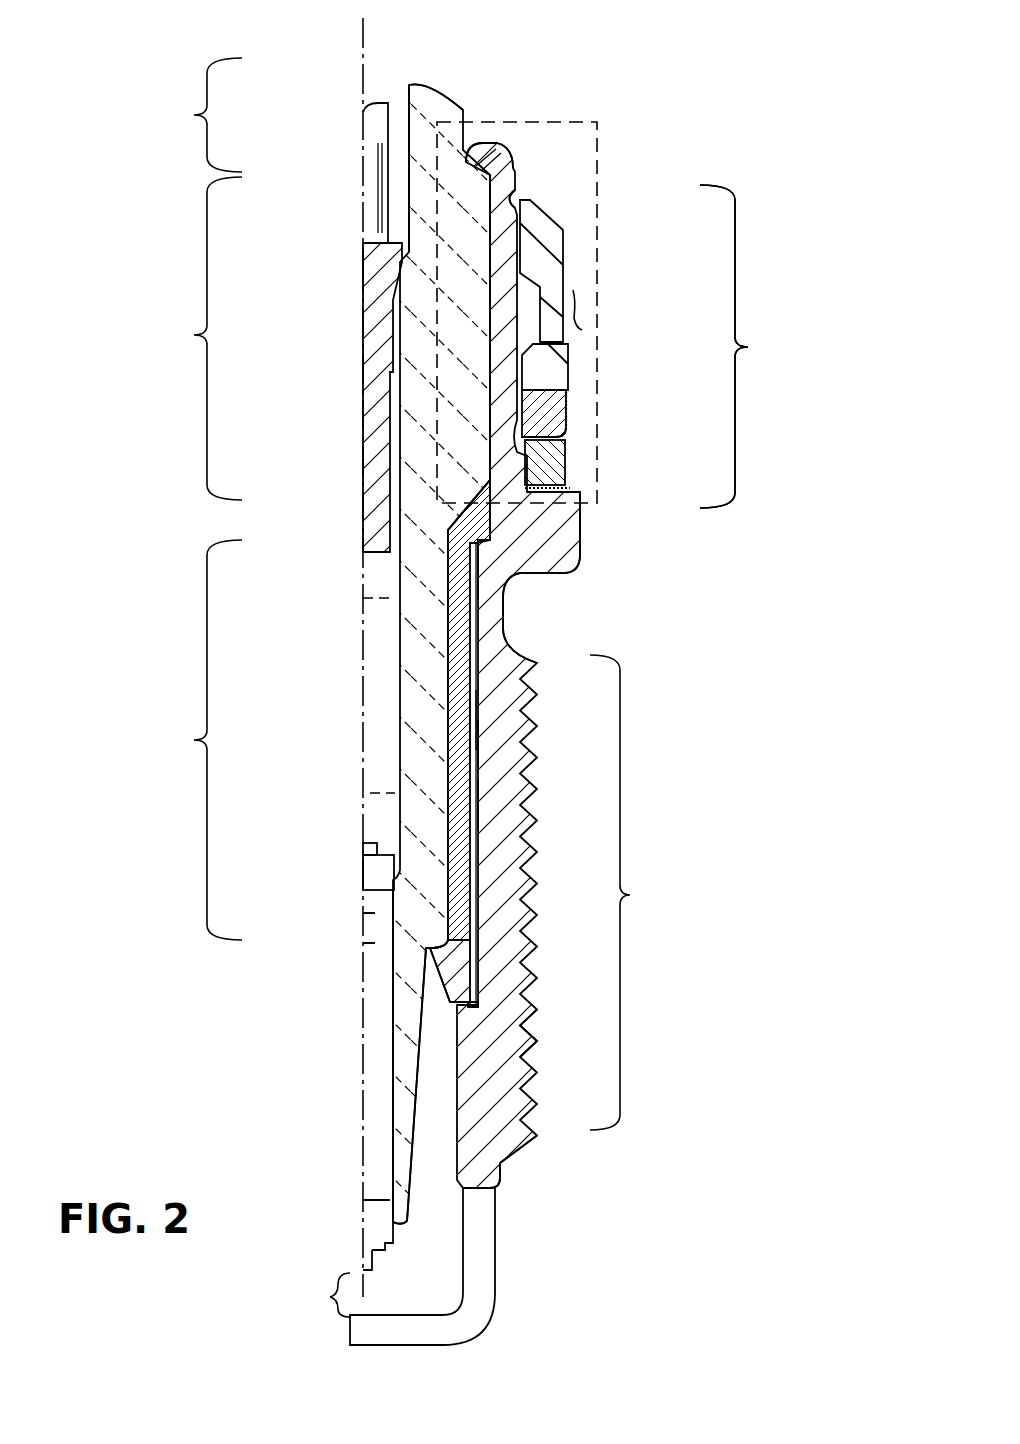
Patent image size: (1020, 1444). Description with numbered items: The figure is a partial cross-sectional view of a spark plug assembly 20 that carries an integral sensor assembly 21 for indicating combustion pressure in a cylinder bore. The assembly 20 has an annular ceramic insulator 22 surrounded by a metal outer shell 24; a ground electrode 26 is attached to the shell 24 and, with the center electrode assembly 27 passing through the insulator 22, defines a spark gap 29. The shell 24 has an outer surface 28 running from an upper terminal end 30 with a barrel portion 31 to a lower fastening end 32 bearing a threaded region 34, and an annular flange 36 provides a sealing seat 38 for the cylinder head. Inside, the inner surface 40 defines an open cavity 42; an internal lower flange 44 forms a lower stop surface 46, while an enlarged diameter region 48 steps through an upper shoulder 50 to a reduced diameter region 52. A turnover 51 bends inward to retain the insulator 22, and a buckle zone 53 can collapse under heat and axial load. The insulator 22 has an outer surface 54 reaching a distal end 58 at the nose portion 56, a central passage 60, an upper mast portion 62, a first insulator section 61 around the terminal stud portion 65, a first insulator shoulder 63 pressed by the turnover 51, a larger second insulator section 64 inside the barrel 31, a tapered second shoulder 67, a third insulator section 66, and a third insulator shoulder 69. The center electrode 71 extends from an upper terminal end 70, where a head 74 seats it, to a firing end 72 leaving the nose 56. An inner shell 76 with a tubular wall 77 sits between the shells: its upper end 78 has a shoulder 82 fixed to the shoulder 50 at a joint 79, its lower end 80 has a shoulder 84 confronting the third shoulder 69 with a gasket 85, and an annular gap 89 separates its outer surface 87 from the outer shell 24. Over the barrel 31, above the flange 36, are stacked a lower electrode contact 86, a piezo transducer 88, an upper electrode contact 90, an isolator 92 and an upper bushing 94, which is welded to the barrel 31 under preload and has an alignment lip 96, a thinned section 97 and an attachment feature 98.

The spark plug assembly 20 is at (615, 132).
The sensor assembly 21 is at (360, 288).
The ceramic insulator 22 is at (410, 84).
The outer shell 24 is at (524, 1147).
The ground electrode 26 is at (498, 1213).
The center electrode assembly 27 is at (348, 226).
The outer surface 28 is at (519, 187).
The spark gap 29 is at (324, 1295).
The upper terminal end 30 is at (501, 140).
The barrel portion 31 is at (758, 346).
The lower fastening end 32 is at (505, 1175).
The threaded region 34 is at (630, 892).
The annular flange 36 is at (583, 540).
The sealing seat 38 is at (542, 580).
The inner surface 40 is at (472, 727).
The open cavity 42 is at (424, 132).
The internal lower flange 44 is at (452, 1010).
The lower stop surface 46 is at (450, 1002).
The enlarged diameter region 48 is at (724, 346).
The upper flange or shoulder 50 is at (472, 541).
The turnover 51 is at (485, 140).
The reduced diameter region 52 is at (473, 653).
The buckle zone 53 is at (470, 468).
The outer surface 54 is at (454, 627).
The nose portion 56 is at (416, 1130).
The distal end 58 is at (407, 1225).
The central passage 60 is at (378, 97).
The first insulator section 61 is at (201, 115).
The upper mast portion 62 is at (420, 85).
The first insulator shoulder 63 is at (509, 157).
The second insulator section 64 is at (201, 338).
The terminal stud portion 65 is at (372, 140).
The third insulator section 66 is at (201, 740).
The second shoulder 67 is at (485, 448).
The third insulator shoulder 69 is at (428, 947).
The upper terminal end 70 is at (373, 868).
The center electrode 71 is at (375, 943).
The firing end 72 is at (375, 1275).
The head 74 is at (374, 846).
The inner shell 76 is at (478, 717).
The tubular wall 77 is at (457, 686).
The upper end 78 is at (500, 542).
The joint 79 is at (548, 577).
The lower end 80 is at (520, 1040).
The shoulder 82 is at (448, 558).
The shoulder 84 is at (437, 961).
The gasket 85 is at (375, 913).
The lower electrode contact 86 is at (571, 488).
The outer surface 87 is at (478, 740).
The piezo transducer 88 is at (562, 460).
The annular gap 89 is at (478, 800).
The upper electrode contact 90 is at (568, 414).
The isolator 92 is at (566, 393).
The upper bushing 94 is at (565, 270).
The alignment lip 96 is at (512, 199).
The thinned section 97 is at (582, 318).
The spark plug attachment feature 98 is at (571, 362).